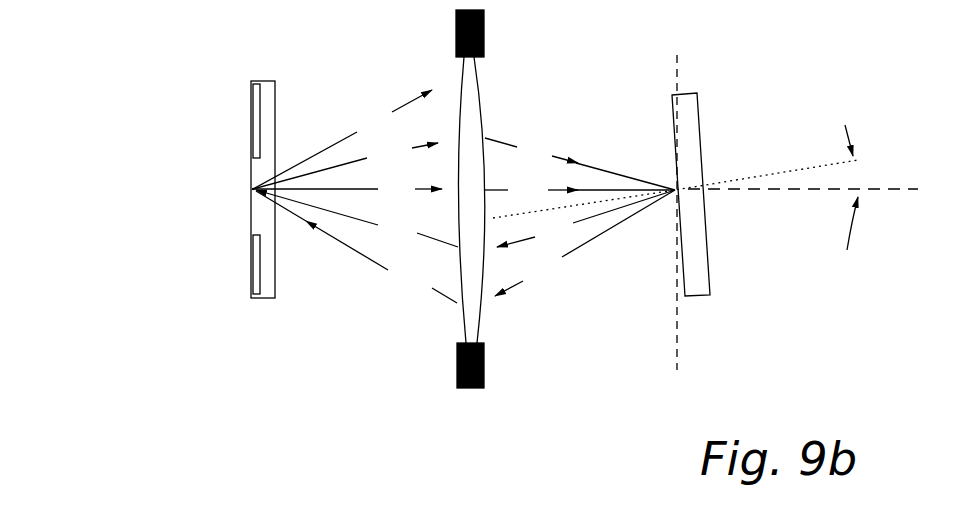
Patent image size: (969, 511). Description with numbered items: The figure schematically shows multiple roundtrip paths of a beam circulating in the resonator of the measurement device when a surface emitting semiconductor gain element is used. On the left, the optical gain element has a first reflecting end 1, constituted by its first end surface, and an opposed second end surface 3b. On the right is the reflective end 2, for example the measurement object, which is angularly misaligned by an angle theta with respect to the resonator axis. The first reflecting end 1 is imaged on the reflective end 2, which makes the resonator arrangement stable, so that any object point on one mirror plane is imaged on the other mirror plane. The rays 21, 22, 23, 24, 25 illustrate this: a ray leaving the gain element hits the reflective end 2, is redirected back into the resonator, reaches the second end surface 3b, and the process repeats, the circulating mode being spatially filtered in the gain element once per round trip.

The first reflecting end 1 is at (235, 182).
The reflective end 2 is at (705, 212).
The second end surface 3b is at (287, 197).
The ray 21 is at (464, 189).
The ray 22 is at (465, 220).
The ray 23 is at (464, 163).
The ray 24 is at (465, 246).
The ray 25 is at (342, 139).